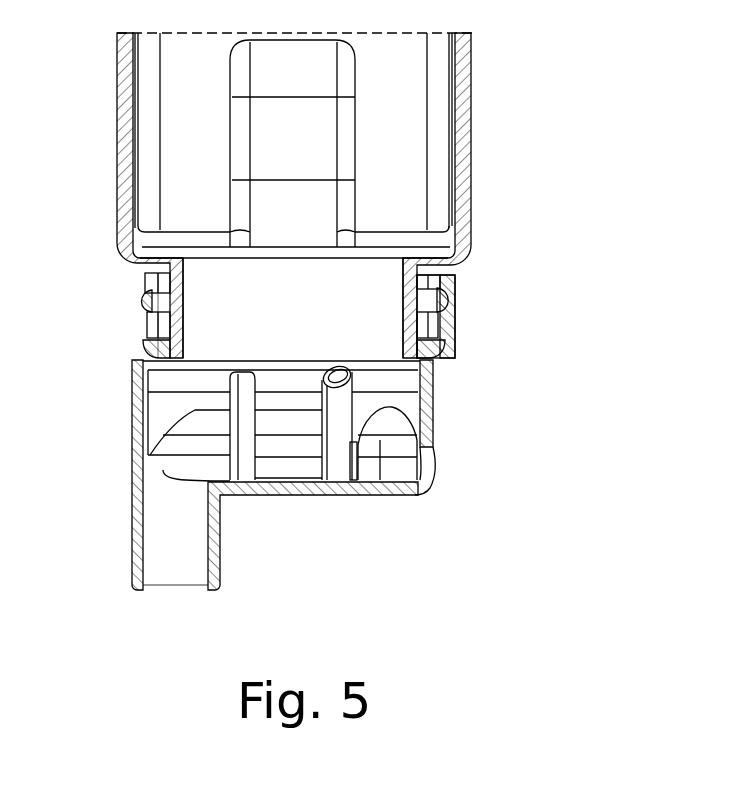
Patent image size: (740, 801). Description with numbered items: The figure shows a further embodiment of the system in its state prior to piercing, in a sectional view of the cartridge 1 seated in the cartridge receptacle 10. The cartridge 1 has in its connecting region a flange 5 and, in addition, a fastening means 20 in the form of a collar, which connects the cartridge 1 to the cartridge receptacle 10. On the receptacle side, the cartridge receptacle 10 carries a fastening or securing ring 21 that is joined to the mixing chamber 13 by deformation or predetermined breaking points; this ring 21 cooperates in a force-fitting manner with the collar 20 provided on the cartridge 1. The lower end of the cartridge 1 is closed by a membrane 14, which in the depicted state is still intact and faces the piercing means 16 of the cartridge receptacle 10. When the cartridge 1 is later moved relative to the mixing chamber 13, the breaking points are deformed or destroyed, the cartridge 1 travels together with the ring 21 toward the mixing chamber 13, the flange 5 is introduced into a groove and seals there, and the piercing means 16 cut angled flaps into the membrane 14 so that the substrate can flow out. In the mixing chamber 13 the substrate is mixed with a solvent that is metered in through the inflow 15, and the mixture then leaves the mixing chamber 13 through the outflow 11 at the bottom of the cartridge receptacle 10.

The cartridge 1 is at (514, 146).
The flange 5 is at (417, 348).
The cartridge receptacle 10 is at (430, 418).
The outflow 11 is at (178, 572).
The mixing chamber 13 is at (273, 450).
The membrane 14 is at (140, 338).
The inflow 15 is at (438, 468).
The piercing means 16 is at (336, 468).
The fastening means 20 is at (450, 298).
The securing ring 21 is at (143, 300).